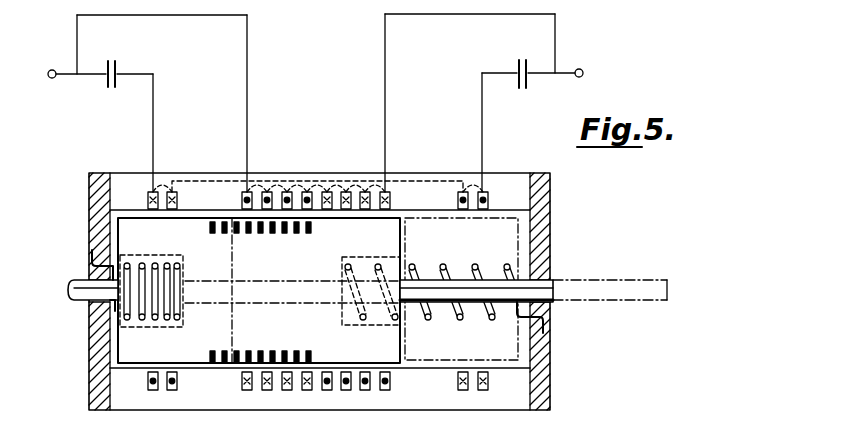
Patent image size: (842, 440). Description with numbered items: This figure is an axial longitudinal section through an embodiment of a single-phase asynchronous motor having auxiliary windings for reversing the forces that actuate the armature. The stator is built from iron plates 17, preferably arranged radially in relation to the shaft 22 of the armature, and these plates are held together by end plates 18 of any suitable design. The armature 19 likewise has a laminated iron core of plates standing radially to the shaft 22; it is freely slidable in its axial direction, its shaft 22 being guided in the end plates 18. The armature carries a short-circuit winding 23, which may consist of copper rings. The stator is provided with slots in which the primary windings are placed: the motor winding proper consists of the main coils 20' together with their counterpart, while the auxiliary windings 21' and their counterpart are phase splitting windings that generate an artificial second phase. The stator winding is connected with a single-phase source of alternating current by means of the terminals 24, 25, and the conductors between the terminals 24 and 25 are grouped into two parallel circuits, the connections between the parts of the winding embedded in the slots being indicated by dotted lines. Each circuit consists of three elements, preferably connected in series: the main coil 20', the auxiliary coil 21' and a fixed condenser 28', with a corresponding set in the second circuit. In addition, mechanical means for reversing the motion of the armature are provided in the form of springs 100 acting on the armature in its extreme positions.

The iron plates of the stator 17 is at (428, 398).
The end plates 18 is at (552, 361).
The armature 19 is at (345, 250).
The main coil 20' is at (294, 405).
The auxiliary winding 21' is at (480, 405).
The shaft 22 is at (72, 301).
The short-circuit winding 23 is at (219, 221).
The terminal 24 is at (52, 78).
The terminal 25 is at (580, 69).
The fixed condenser 28' is at (480, 103).
The springs 100 is at (176, 263).